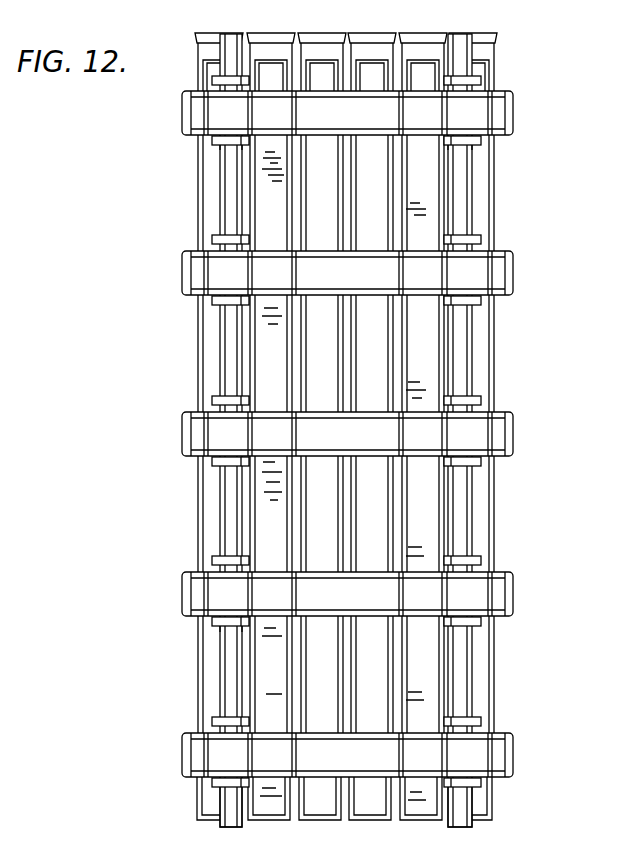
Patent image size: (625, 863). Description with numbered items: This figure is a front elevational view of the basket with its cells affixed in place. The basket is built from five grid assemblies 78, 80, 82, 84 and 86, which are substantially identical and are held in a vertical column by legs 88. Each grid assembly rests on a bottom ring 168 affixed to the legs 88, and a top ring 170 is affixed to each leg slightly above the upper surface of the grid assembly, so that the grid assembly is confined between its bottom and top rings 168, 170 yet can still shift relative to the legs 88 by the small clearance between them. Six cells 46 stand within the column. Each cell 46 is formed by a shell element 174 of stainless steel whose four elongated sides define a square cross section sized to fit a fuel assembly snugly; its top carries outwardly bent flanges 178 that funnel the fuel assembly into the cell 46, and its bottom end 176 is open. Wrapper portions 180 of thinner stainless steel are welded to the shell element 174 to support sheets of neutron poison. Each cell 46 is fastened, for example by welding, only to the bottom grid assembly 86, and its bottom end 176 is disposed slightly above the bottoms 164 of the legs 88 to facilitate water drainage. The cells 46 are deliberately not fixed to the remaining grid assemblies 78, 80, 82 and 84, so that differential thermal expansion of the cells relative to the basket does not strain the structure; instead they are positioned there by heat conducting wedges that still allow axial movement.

The cell 46 is at (268, 31).
The grid assembly 78 is at (524, 132).
The grid assembly 80 is at (523, 283).
The grid assembly 82 is at (522, 439).
The grid assembly 84 is at (522, 600).
The bottom grid assembly 86 is at (522, 762).
The leg 88 is at (225, 675).
The bottom of leg 164 is at (230, 830).
The bottom ring 168 is at (475, 145).
The top ring 170 is at (481, 80).
The shell element 174 is at (200, 53).
The bottom end 176 is at (327, 821).
The outwardly bent flange 178 is at (202, 35).
The wrapper portion 180 is at (321, 77).